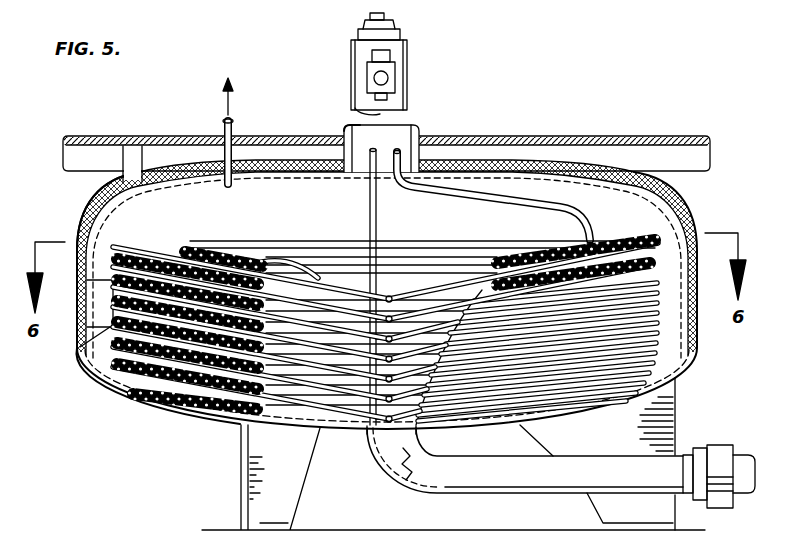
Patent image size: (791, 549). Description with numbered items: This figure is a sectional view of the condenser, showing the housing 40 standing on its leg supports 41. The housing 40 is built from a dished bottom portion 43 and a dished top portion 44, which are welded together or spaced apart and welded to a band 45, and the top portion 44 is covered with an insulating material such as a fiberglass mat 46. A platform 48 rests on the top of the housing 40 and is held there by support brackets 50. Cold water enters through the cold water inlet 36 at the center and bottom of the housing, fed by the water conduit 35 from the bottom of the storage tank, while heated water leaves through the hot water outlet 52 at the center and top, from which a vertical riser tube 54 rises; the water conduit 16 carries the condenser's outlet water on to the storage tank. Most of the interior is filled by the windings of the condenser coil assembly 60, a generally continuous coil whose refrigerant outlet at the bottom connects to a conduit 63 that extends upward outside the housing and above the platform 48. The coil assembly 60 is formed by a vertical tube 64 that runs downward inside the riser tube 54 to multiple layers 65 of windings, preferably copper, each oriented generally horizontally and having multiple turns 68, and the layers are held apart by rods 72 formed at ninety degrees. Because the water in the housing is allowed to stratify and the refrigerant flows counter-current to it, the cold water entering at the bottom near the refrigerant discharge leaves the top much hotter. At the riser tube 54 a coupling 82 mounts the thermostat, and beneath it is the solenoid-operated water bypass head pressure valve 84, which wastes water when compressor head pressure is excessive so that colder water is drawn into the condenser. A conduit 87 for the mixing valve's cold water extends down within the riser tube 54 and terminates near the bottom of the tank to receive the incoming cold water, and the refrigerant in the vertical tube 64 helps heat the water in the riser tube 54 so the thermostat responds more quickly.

The water conduit 16 is at (371, 16).
The coupling 82 is at (406, 37).
The water bypass head pressure valve 84 is at (367, 72).
The vertical riser tube 54 is at (352, 97).
The hot water outlet 52 is at (396, 143).
The conduit 63 is at (233, 123).
The platform 48 is at (173, 138).
The support brackets 50 is at (132, 150).
The fiberglass mat 46 is at (102, 200).
The dished top portion 44 is at (271, 172).
The band 45 is at (84, 302).
The dished bottom portion 43 is at (134, 404).
The housing 40 is at (91, 381).
The conduit 87 is at (370, 206).
The vertical tube 64 is at (416, 190).
The condenser coil assembly 60 is at (462, 212).
The layers 65 is at (183, 250).
The turns 68 is at (554, 243).
The rods 72 is at (86, 353).
The cold water inlet 36 is at (372, 430).
The water conduit 35 is at (540, 493).
The leg supports 41 is at (247, 508).